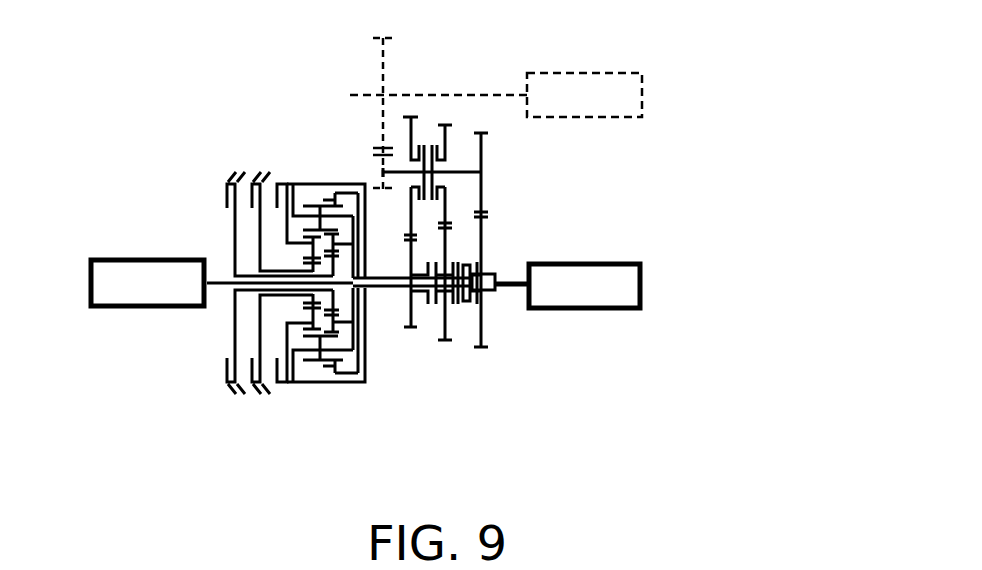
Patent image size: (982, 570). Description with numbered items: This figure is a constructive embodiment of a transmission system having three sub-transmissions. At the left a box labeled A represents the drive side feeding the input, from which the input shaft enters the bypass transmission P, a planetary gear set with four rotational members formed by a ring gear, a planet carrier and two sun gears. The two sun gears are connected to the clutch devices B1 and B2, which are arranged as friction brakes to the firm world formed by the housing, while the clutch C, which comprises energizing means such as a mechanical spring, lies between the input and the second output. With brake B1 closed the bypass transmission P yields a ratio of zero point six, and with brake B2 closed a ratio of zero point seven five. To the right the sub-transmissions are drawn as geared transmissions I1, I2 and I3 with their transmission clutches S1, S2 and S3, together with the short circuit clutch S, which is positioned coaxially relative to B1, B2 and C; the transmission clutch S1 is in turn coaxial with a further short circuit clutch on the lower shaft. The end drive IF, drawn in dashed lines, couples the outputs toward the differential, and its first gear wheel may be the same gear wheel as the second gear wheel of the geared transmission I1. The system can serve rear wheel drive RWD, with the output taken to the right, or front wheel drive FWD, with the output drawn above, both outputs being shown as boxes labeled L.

The drive unit / input A is at (222, 283).
The first clutch device B1 is at (229, 181).
The third clutch device B2 is at (263, 172).
The clutch C is at (282, 182).
The bypass transmission P is at (310, 368).
The end drive IF is at (366, 114).
The second shift element S2 is at (426, 132).
The transmission clutch S3 is at (432, 130).
The geared transmission I1 is at (480, 257).
The second gear stage I2 is at (410, 278).
The geared transmission I3 is at (444, 283).
The short circuit clutch S is at (429, 318).
The transmission clutch S1 is at (469, 307).
The front wheel drive FWD is at (496, 80).
The rear wheel drive RWD is at (567, 270).
The load L is at (496, 176).